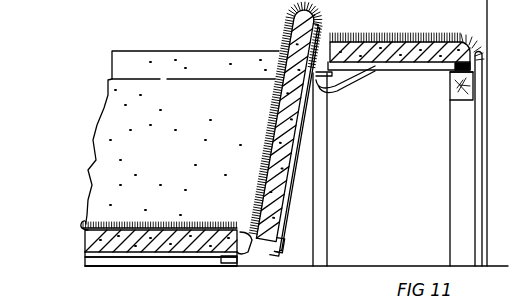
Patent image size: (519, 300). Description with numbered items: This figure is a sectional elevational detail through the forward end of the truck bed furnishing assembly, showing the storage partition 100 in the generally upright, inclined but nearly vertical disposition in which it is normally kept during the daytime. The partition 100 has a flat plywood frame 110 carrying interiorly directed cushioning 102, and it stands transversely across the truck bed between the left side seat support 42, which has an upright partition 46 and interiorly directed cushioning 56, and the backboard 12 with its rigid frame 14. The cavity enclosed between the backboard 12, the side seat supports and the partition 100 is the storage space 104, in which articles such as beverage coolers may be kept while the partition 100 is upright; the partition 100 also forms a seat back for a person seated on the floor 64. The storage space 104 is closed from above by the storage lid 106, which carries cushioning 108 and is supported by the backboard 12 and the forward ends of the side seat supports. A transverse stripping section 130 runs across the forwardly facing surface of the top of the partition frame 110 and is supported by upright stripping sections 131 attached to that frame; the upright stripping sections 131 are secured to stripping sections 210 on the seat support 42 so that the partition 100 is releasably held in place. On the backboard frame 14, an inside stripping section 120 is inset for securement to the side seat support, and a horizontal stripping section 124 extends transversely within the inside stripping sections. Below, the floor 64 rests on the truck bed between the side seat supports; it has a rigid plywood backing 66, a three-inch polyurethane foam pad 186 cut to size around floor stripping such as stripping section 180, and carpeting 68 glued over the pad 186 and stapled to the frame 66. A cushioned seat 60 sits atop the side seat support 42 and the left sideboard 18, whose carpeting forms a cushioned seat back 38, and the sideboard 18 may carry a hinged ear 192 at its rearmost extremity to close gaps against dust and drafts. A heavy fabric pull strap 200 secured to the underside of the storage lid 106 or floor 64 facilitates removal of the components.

The backboard 12 is at (444, 192).
The rigid frame 14 is at (477, 137).
The left sideboard 18 is at (346, 299).
The cushioned seat back 38 is at (311, 291).
The left side seat support 42 is at (97, 167).
The upright partition 46 is at (373, 247).
The interiorly directed cushioning 56 is at (178, 156).
The cushioned seat 60 is at (163, 51).
The floor 64 is at (115, 223).
The rigid plywood backing 66 is at (132, 263).
The upwardly directed cushioning 68 is at (71, 229).
The storage partition 100 is at (260, 129).
The interiorly directed cushioning 102 is at (249, 158).
The storage space 104 is at (399, 189).
The storage lid 106 is at (438, 30).
The cushioning 108 is at (393, 37).
The frame 110 is at (273, 200).
The inside stripping section 120 is at (463, 248).
The horizontal stripping section 124 is at (452, 88).
The transverse stripping section 130 is at (329, 38).
The upright stripping sections 131 is at (308, 104).
The stripping section 180 is at (197, 254).
The polyurethane foam pad 186 is at (182, 247).
The sideboard ear 192 is at (228, 282).
The pull straps 200 is at (342, 85).
The stripping sections 210 is at (318, 168).